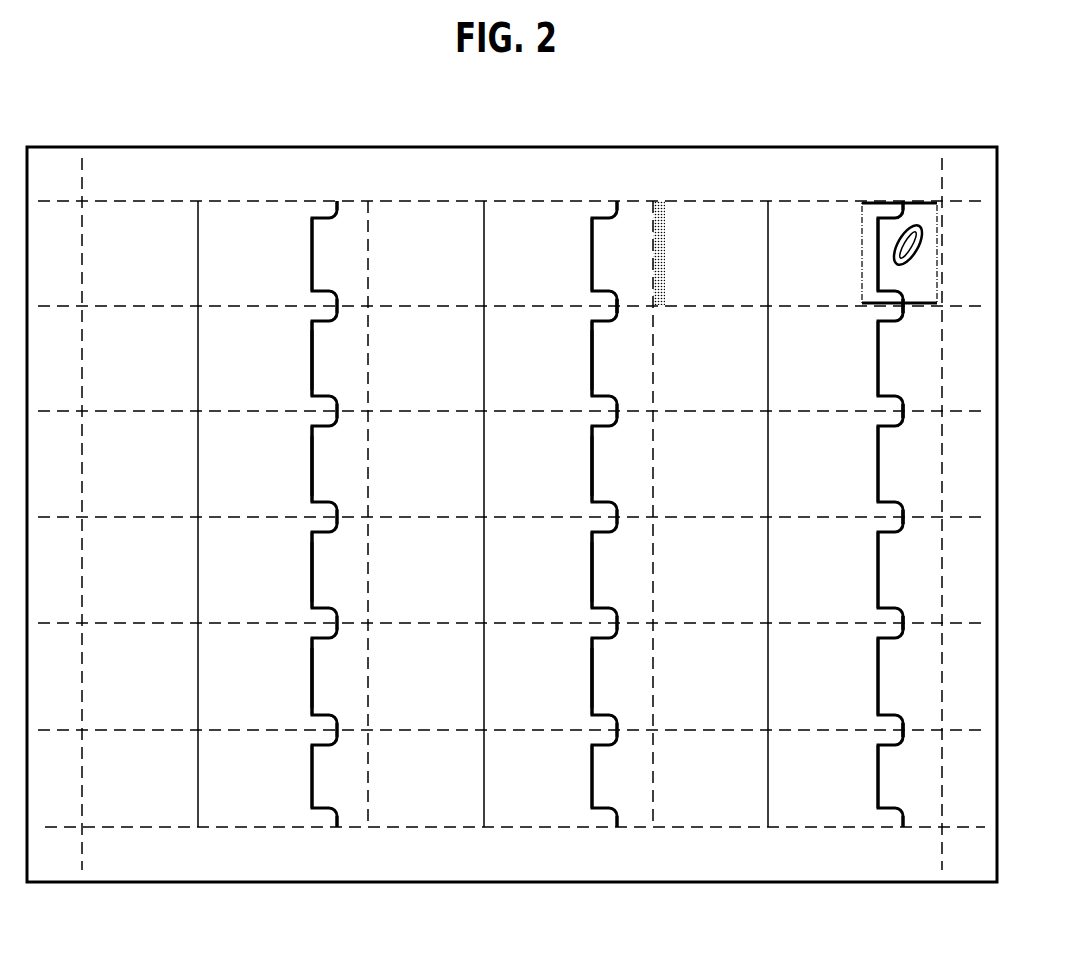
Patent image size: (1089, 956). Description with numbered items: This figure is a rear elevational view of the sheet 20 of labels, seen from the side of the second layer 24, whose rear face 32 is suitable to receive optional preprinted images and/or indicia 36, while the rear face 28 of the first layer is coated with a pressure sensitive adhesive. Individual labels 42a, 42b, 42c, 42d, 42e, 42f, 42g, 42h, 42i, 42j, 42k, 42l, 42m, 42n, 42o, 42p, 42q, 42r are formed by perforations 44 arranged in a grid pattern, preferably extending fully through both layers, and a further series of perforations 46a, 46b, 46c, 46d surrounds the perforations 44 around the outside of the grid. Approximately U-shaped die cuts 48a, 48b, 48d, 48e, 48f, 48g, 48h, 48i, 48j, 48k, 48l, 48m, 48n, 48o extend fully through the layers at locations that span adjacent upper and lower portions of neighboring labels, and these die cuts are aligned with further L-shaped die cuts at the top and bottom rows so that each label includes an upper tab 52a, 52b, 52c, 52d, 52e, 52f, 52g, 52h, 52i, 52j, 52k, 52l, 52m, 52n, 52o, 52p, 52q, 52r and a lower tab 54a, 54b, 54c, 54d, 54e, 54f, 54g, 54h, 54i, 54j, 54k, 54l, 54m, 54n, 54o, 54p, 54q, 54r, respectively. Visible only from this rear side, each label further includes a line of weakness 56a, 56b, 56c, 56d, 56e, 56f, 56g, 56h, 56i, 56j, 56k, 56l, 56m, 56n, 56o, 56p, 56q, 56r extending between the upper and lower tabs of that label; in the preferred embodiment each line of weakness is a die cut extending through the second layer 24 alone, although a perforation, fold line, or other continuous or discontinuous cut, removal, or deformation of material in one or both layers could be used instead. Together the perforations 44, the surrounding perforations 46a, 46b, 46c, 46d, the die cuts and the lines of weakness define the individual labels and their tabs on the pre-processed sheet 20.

The sheet 20 is at (386, 108).
The second layer 24 is at (163, 146).
The rear face of the first layer 28 is at (742, 168).
The rear face of the second layer 32 is at (212, 160).
The preprinted images and/or indicia 36 is at (652, 182).
The perforations 44 is at (232, 305).
The perforation 46a is at (108, 198).
The perforation 46b is at (80, 216).
The perforation 46c is at (118, 828).
The perforation 46d is at (942, 372).
The label 42a is at (728, 265).
The label 42b is at (552, 265).
The label 42c is at (157, 265).
The label 42d is at (730, 368).
The label 42e is at (436, 381).
The label 42f is at (262, 365).
The label 42g is at (730, 473).
The label 42h is at (552, 491).
The label 42i is at (258, 468).
The label 42j is at (728, 586).
The label 42k is at (426, 596).
The label 42l is at (154, 586).
The label 42m is at (834, 698).
The label 42n is at (524, 698).
The label 42o is at (234, 681).
The label 42p is at (731, 803).
The label 42q is at (432, 820).
The label 42r is at (220, 810).
The die cut 48a is at (903, 310).
The die cut 48b is at (620, 300).
The die cut 48d is at (903, 412).
The die cut 48e is at (625, 397).
The die cut 48f is at (333, 396).
The die cut 48g is at (903, 515).
The die cut 48h is at (626, 502).
The die cut 48i is at (334, 502).
The die cut 48j is at (903, 622).
The die cut 48k is at (626, 608).
The die cut 48l is at (335, 606).
The die cut 48m is at (903, 730).
The die cut 48n is at (620, 718).
The die cut 48o is at (335, 716).
The upper tab 52a is at (887, 212).
The upper tab 52b is at (603, 210).
The upper tab 52c is at (322, 210).
The upper tab 52d is at (887, 313).
The upper tab 52e is at (605, 314).
The upper tab 52f is at (325, 312).
The upper tab 52g is at (887, 420).
The upper tab 52h is at (605, 418).
The upper tab 52i is at (325, 418).
The upper tab 52j is at (887, 525).
The upper tab 52k is at (605, 524).
The upper tab 52l is at (325, 524).
The upper tab 52m is at (887, 630).
The upper tab 52n is at (605, 630).
The upper tab 52o is at (325, 630).
The upper tab 52p is at (887, 740).
The upper tab 52q is at (605, 738).
The upper tab 52r is at (325, 738).
The lower tab 54a is at (887, 298).
The lower tab 54b is at (605, 300).
The lower tab 54c is at (325, 300).
The lower tab 54d is at (887, 405).
The lower tab 54e is at (605, 406).
The lower tab 54f is at (325, 408).
The lower tab 54g is at (887, 514).
The lower tab 54h is at (605, 512).
The lower tab 54i is at (325, 514).
The lower tab 54j is at (887, 620).
The lower tab 54k is at (605, 620).
The lower tab 54l is at (325, 620).
The lower tab 54m is at (887, 726).
The lower tab 54n is at (605, 726).
The lower tab 54o is at (325, 726).
The lower tab 54p is at (887, 818).
The lower tab 54q is at (604, 825).
The lower tab 54r is at (325, 817).
The line of weakness 56a is at (877, 232).
The line of weakness 56b is at (592, 240).
The line of weakness 56c is at (311, 255).
The line of weakness 56d is at (877, 352).
The line of weakness 56e is at (592, 355).
The line of weakness 56f is at (312, 362).
The line of weakness 56g is at (877, 458).
The line of weakness 56h is at (592, 442).
The line of weakness 56i is at (312, 466).
The line of weakness 56j is at (877, 560).
The line of weakness 56k is at (592, 555).
The line of weakness 56l is at (312, 570).
The line of weakness 56m is at (877, 650).
The line of weakness 56n is at (592, 652).
The line of weakness 56o is at (312, 668).
The line of weakness 56p is at (877, 762).
The line of weakness 56q is at (592, 760).
The line of weakness 56r is at (312, 760).